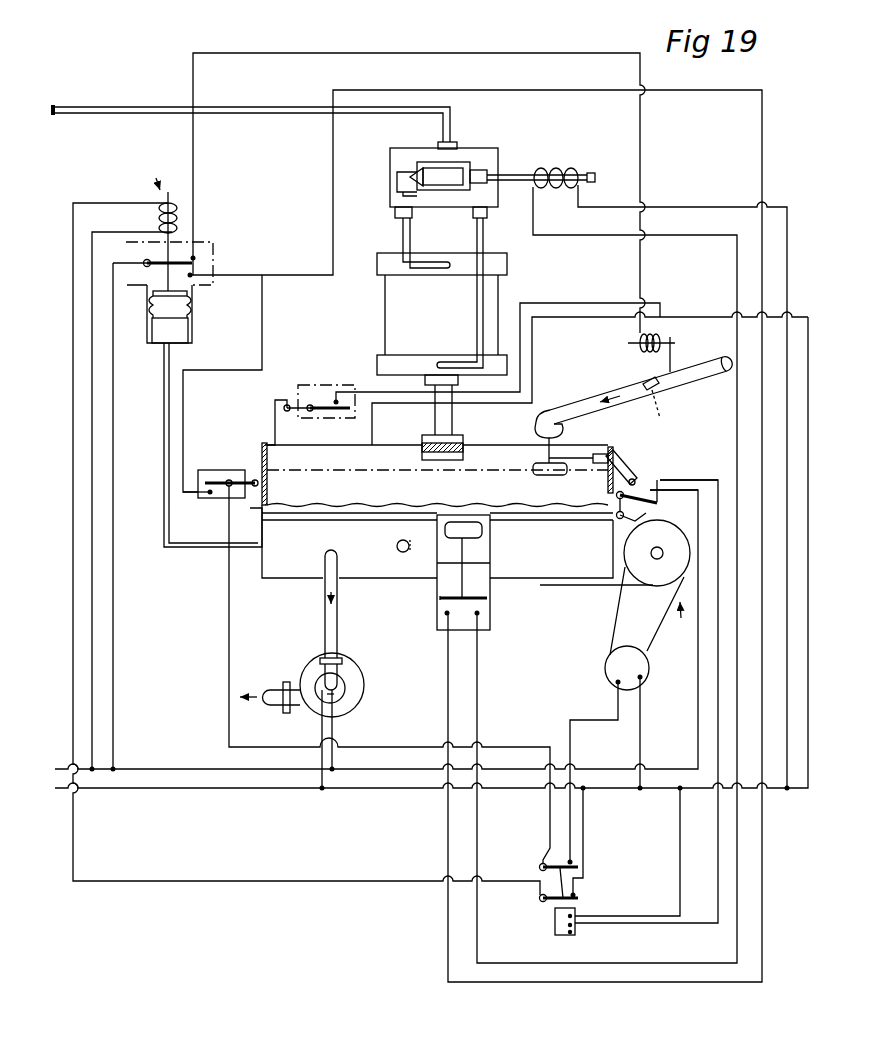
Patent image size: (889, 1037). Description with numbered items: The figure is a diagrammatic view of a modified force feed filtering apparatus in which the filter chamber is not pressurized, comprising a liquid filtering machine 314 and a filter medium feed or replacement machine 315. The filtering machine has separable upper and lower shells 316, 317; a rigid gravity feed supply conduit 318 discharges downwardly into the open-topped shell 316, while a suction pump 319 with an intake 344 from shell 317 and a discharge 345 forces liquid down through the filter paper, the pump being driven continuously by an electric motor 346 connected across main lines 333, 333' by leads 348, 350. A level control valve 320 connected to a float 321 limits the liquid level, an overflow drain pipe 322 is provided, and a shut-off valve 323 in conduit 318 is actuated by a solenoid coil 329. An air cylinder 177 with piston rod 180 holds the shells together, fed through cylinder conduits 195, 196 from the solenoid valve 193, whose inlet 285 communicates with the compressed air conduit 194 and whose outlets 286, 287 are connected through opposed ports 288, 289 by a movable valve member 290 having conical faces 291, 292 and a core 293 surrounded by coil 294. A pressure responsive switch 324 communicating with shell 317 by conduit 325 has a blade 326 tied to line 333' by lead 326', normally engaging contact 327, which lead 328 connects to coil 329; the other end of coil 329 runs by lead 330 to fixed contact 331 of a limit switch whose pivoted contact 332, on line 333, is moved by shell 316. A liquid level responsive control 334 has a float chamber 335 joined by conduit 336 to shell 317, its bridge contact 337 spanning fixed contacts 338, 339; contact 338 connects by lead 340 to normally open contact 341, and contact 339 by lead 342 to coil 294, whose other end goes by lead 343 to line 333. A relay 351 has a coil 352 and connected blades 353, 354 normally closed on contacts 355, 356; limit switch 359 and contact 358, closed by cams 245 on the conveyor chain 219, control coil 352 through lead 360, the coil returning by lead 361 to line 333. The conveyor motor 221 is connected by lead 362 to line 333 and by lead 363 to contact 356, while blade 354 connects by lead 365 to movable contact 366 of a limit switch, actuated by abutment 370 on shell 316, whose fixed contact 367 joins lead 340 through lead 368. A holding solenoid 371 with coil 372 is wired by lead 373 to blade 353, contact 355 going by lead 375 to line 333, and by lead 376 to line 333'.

The air cylinder 177 is at (509, 264).
The piston rod 180 is at (455, 415).
The air cylinder controlling solenoid valve 193 is at (512, 138).
The compressed air conduit 194 is at (252, 114).
The cylinder conduit 195 is at (403, 241).
The cylinder conduit 196 is at (484, 297).
The conveyor chain 219 is at (600, 587).
The conveyor driving motor 221 is at (607, 680).
The lugs or cams 245 is at (648, 518).
The inlet 285 is at (450, 165).
The outlet 286 is at (400, 196).
The outlet 287 is at (484, 202).
The valve port 288 is at (418, 172).
The valve port 289 is at (488, 172).
The movable valve member 290 is at (455, 187).
The conical valve face 291 is at (432, 192).
The conical valve face 292 is at (492, 178).
The core 293 is at (591, 173).
The coil 294 is at (557, 190).
The liquid filtering machine 314 is at (616, 444).
The filter medium feed or replacement machine 315 is at (654, 611).
The upper shell 316 is at (262, 458).
The lower shell 317 is at (298, 581).
The liquid gravity feed supply conduit 318 is at (712, 362).
The suction pump 319 is at (355, 698).
The valve 320 is at (536, 431).
The float 321 is at (549, 477).
The overflow drain pipe 322 is at (636, 468).
The shut-off valve 323 is at (668, 392).
The pressure responsive switch 324 is at (208, 318).
The conduit 325 is at (184, 411).
The switch blade 326 is at (187, 262).
The lead 326' is at (134, 517).
The contact 327 is at (196, 257).
The lead 328 is at (195, 222).
The solenoid coil 329 is at (640, 350).
The lead 330 is at (580, 304).
The fixed contact 331 is at (336, 400).
The pivoted contact 332 is at (316, 404).
The main line 333 is at (431, 566).
The main line 333' is at (376, 650).
The liquid level responsive control 334 is at (489, 600).
The float chamber 335 is at (492, 549).
The conduit 336 is at (405, 553).
The bridge contact 337 is at (440, 598).
The fixed contact 338 is at (445, 615).
The fixed contact 339 is at (479, 615).
The lead 340 is at (306, 278).
The normally open contact 341 is at (194, 278).
The lead 342 is at (598, 236).
The lead 343 is at (686, 208).
The intake 344 is at (345, 669).
The discharge 345 is at (303, 713).
The electric motor 346 is at (336, 695).
The lead 348 is at (320, 776).
The lead 350 is at (340, 768).
The relay 351 is at (592, 898).
The relay coil 352 is at (571, 937).
The switch blade 353 is at (546, 902).
The switch blade 354 is at (540, 865).
The fixed contact 355 is at (577, 893).
The fixed contact 356 is at (574, 862).
The fixed contact 358 is at (654, 489).
The limit switch 359 is at (662, 492).
The lead 360 is at (718, 666).
The lead 361 is at (682, 882).
The lead 362 is at (642, 723).
The lead 363 is at (572, 735).
The lead 365 is at (231, 637).
The movable contact 366 is at (215, 480).
The fixed contact 367 is at (208, 495).
The lead 368 is at (183, 492).
The abutment 370 is at (256, 520).
The solenoid 371 is at (157, 173).
The coil 372 is at (178, 208).
The lead 373 is at (75, 380).
The lead 375 is at (585, 820).
The lead 376 is at (94, 448).